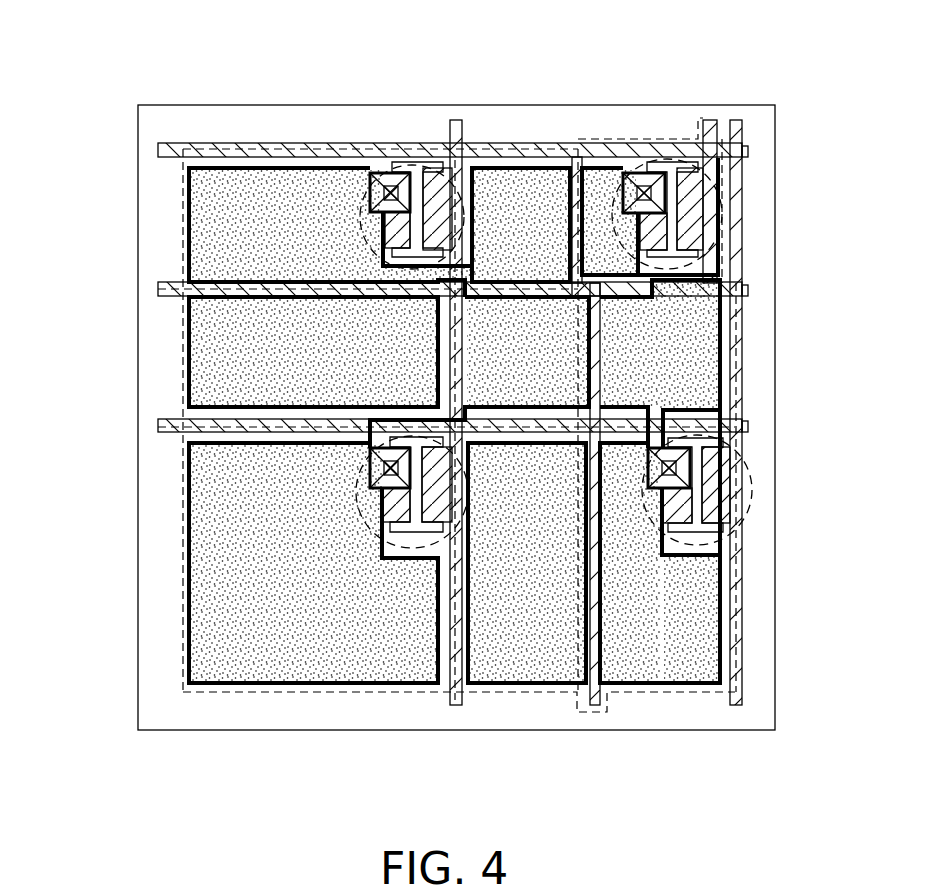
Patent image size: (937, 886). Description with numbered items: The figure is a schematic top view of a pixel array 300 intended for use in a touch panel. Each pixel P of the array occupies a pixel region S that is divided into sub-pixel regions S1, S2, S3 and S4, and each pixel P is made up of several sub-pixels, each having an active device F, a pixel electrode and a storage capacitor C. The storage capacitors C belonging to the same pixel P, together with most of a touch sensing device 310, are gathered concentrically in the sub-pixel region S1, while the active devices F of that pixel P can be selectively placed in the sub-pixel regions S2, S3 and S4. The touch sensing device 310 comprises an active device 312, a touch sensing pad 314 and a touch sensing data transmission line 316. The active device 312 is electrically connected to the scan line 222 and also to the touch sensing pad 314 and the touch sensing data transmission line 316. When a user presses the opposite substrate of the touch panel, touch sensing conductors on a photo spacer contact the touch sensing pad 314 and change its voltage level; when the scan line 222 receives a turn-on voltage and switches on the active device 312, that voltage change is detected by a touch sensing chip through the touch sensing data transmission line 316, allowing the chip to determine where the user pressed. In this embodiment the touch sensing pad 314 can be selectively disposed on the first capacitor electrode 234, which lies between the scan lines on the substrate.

The pixel array 300 is at (138, 58).
The pixel P is at (752, 116).
The pixel region S is at (262, 140).
The sub-pixel region S1 is at (752, 228).
The sub-pixel region S2 is at (182, 343).
The sub-pixel region S3 is at (740, 615).
The sub-pixel region S4 is at (182, 572).
The scan line 222 is at (488, 150).
The first capacitor electrode 234 is at (582, 165).
The touch sensing device 310 is at (663, 138).
The active device 312 is at (745, 198).
The touch sensing pad 314 is at (604, 178).
The touch sensing data transmission line 316 is at (597, 378).
The active device F is at (395, 165).
The storage capacitor C is at (518, 168).